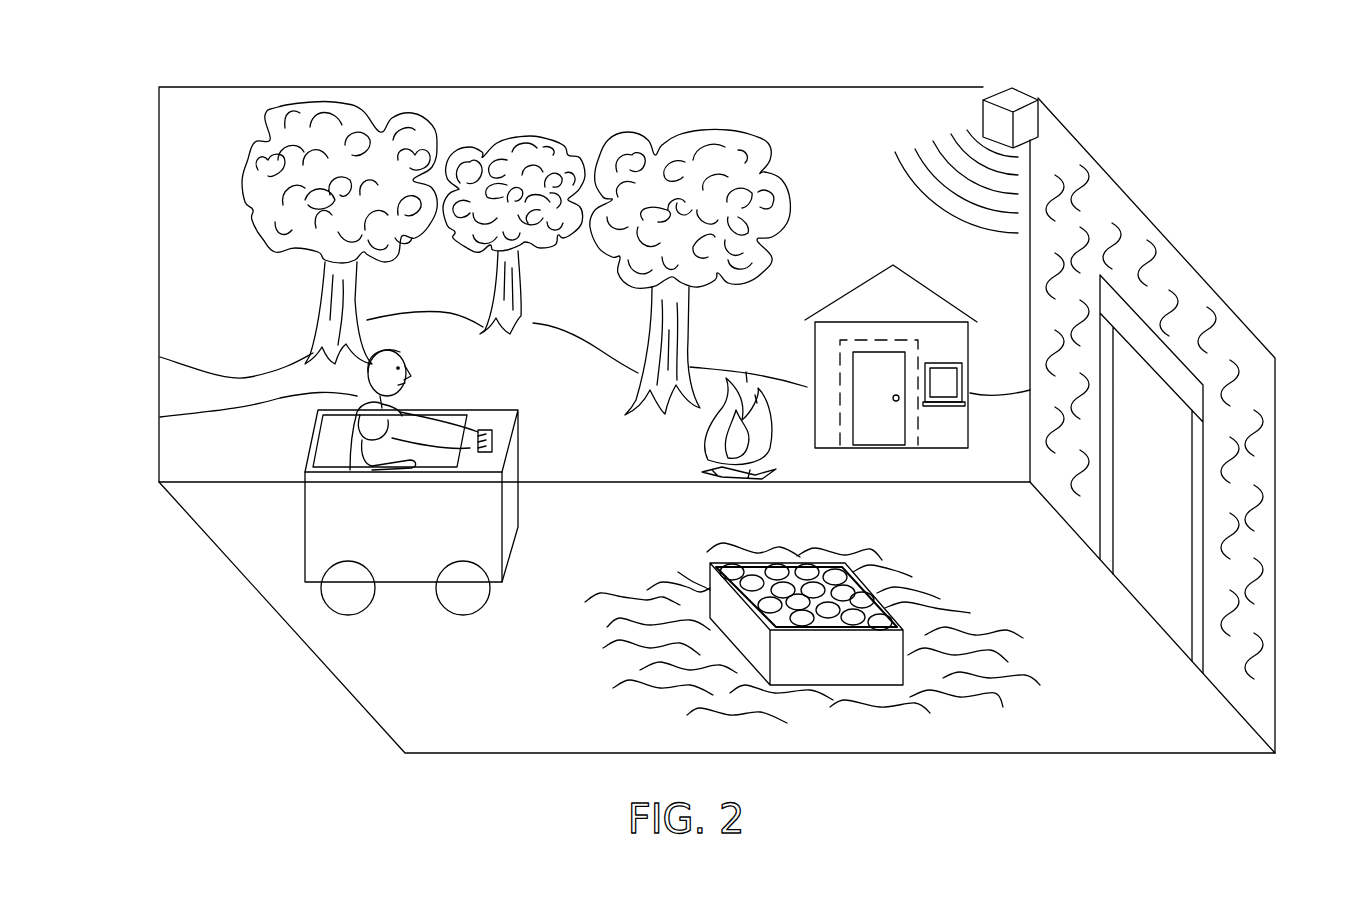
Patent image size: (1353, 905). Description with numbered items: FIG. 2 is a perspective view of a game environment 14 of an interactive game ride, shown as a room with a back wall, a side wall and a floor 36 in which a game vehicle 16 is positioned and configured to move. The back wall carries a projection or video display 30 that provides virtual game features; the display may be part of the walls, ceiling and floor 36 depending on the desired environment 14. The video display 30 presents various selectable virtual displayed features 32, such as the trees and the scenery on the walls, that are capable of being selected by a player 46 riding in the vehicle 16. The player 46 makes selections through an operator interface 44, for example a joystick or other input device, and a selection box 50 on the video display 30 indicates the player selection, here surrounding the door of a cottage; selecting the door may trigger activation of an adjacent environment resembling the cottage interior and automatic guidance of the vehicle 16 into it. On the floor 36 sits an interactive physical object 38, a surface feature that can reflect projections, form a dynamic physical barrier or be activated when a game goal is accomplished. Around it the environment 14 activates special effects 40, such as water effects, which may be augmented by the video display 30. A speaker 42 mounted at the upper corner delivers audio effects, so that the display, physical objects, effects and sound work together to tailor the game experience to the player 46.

The game environment 14 is at (159, 270).
The game vehicle 16 is at (303, 548).
The video display 30 is at (198, 112).
The selectable virtual displayed feature 32 is at (367, 110).
The floor 36 is at (437, 728).
The interactive physical object 38 is at (820, 662).
The special effects 40 is at (960, 702).
The speaker 42 is at (1020, 86).
The operator interface 44 is at (490, 430).
The player 46 is at (160, 418).
The selection box 50 is at (840, 367).